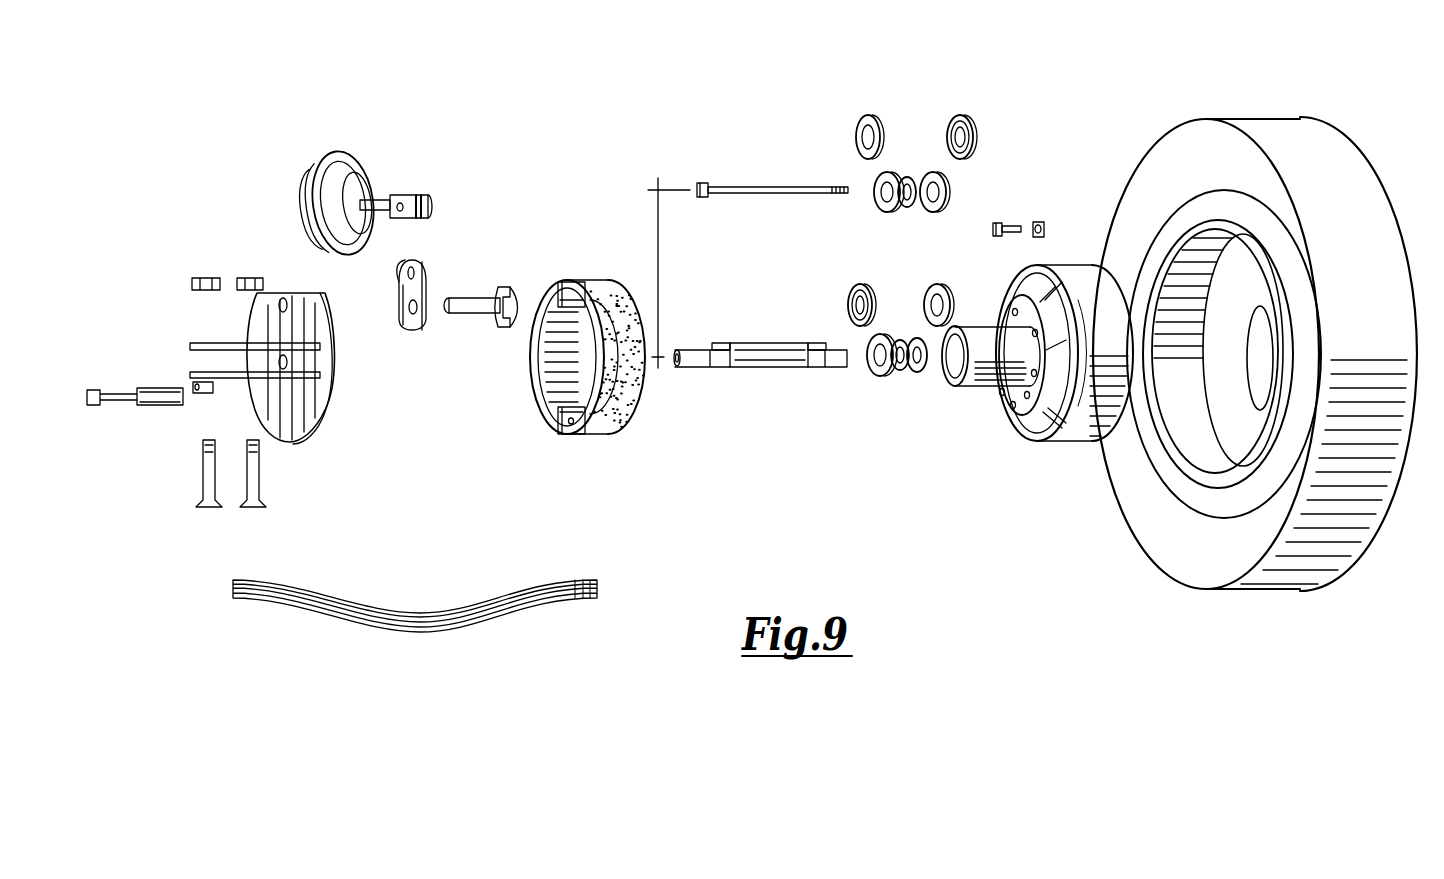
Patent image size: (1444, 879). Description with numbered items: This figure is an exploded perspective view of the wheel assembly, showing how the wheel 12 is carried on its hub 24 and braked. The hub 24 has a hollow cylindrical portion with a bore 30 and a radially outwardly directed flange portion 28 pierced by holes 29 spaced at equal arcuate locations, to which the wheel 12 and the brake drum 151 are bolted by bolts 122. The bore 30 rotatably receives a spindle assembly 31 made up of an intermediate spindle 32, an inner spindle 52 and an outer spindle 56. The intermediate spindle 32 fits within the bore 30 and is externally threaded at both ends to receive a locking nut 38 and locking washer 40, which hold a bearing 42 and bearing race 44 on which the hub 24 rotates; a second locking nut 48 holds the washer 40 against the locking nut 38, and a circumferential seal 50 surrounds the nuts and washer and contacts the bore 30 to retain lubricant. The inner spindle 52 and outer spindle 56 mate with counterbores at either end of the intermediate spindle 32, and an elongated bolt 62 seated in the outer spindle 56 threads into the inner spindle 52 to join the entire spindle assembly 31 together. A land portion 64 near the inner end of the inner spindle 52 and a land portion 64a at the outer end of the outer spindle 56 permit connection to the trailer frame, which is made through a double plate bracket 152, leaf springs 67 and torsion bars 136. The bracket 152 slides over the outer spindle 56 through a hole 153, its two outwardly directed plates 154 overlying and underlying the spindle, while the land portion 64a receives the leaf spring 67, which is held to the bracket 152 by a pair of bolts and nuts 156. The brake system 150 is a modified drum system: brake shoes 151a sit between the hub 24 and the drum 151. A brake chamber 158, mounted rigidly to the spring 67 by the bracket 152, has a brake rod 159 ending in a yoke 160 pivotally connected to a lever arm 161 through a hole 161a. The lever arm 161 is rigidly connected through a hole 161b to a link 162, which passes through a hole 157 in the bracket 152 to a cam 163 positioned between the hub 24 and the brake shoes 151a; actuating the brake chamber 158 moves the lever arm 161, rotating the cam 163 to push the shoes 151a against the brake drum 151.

The wheel 12 is at (1158, 578).
The brake drum 151 is at (1062, 445).
The flange portion 28 is at (993, 406).
The holes 29 is at (1012, 312).
The hub 24 is at (955, 400).
The bore 30 is at (950, 368).
The second locking nut 48 is at (881, 334).
The locking washer 40 is at (900, 372).
The locking nut 38 is at (915, 337).
The circumferential seal 50 is at (947, 296).
The bearing race 44 is at (858, 285).
The bearing 42 is at (852, 300).
The spindle assembly 31 is at (752, 300).
The intermediate spindle 32 is at (750, 375).
The outer spindle 56 is at (700, 377).
The inner spindle 52 is at (838, 375).
The land portion 64a is at (704, 347).
The land portion 64 is at (822, 347).
The elongated bolt 62 is at (795, 185).
The bolts 122 is at (1010, 222).
The brake system 150 is at (567, 492).
The brake shoes 151a is at (625, 425).
The link 162 is at (462, 296).
The cam 163 is at (515, 290).
The lever arm 161 is at (418, 278).
The hole 161a is at (400, 283).
The hole 161b is at (410, 312).
The double plate bracket 152 is at (320, 420).
The hole 157 is at (300, 278).
The hole 153 is at (290, 364).
The plates 154 is at (192, 345).
The torsion bars 136 is at (160, 407).
The bolts and nuts 156 is at (248, 475).
The brake chamber 158 is at (358, 158).
The brake rod 159 is at (385, 198).
The yoke 160 is at (425, 195).
The leaf springs 67 is at (400, 634).